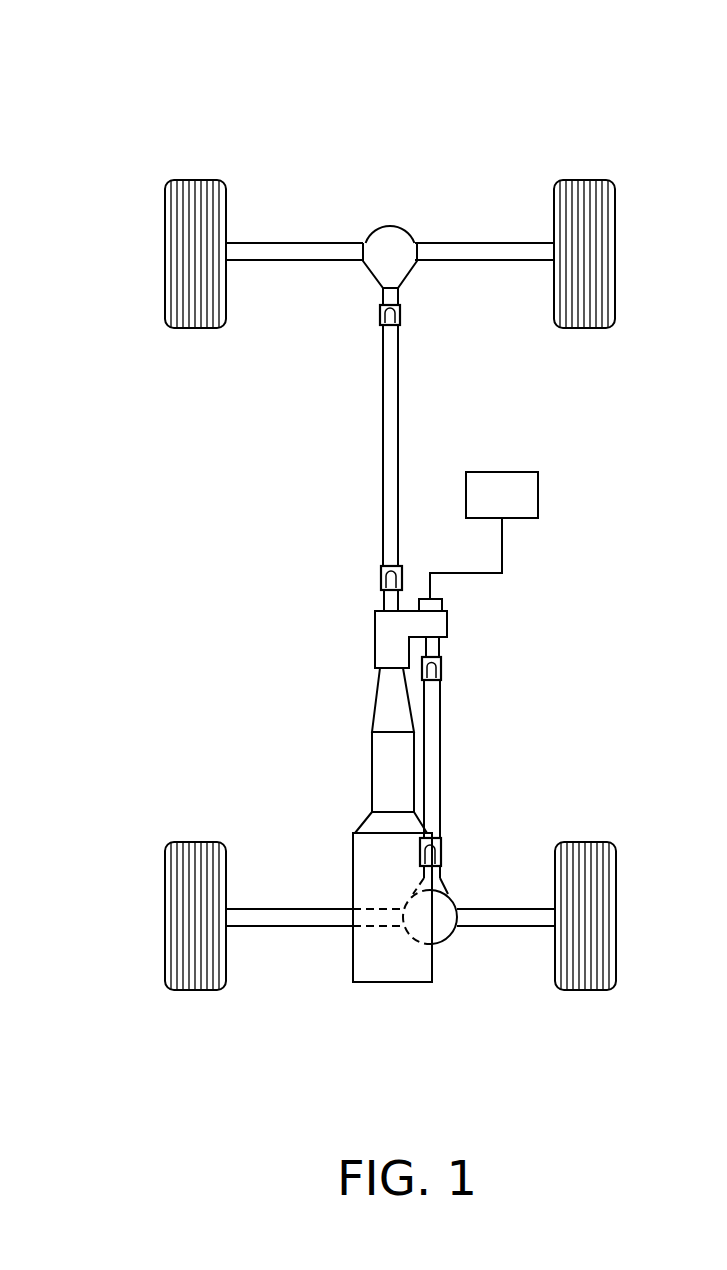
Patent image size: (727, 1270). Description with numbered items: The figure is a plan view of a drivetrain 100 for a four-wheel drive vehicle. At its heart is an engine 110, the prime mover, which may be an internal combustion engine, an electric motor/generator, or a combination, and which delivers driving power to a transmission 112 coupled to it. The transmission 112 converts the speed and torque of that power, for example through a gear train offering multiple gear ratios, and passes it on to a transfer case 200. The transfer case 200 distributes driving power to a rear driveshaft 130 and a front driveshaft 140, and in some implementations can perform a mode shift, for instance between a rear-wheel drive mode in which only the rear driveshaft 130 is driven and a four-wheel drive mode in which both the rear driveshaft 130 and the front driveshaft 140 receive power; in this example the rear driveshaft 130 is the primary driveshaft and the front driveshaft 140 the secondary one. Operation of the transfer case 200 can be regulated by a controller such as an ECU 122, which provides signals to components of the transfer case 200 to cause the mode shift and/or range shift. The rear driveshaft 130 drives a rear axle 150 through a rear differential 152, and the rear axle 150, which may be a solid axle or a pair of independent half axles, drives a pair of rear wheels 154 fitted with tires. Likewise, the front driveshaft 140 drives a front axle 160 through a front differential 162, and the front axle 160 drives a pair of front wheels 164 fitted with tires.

The drivetrain 100 is at (128, 92).
The engine 110 is at (365, 868).
The transmission 112 is at (378, 766).
The ECU 122 is at (538, 483).
The rear driveshaft 130 is at (390, 448).
The front driveshaft 140 is at (434, 749).
The rear axle 150 is at (472, 248).
The rear differential 152 is at (390, 237).
The rear wheels 154 is at (190, 180).
The front axle 160 is at (510, 926).
The front differential 162 is at (440, 905).
The front wheels 164 is at (185, 842).
The transfer case 200 is at (387, 640).